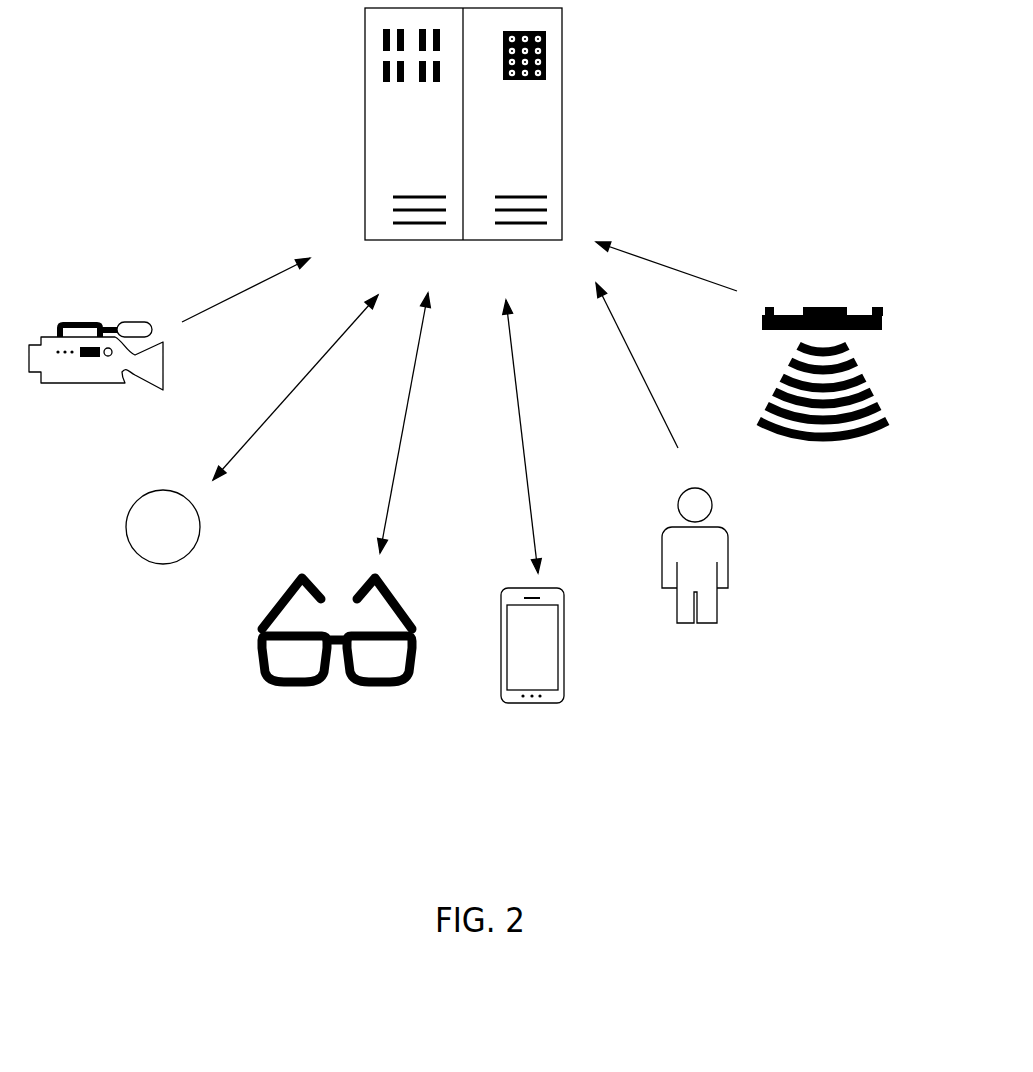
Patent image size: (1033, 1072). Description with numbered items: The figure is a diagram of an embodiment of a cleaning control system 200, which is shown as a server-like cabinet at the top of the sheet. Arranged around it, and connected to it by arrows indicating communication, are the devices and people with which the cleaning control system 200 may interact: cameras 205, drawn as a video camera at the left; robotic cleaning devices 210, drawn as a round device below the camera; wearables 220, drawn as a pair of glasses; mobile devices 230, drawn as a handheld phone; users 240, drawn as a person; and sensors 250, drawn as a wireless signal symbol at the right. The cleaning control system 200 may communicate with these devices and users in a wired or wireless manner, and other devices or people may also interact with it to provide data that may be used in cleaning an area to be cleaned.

The cleaning control system 200 is at (562, 108).
The cameras 205 is at (163, 383).
The robotic cleaning devices 210 is at (189, 501).
The wearables 220 is at (413, 628).
The mobile devices 230 is at (564, 655).
The users 240 is at (728, 560).
The sensors 250 is at (880, 325).